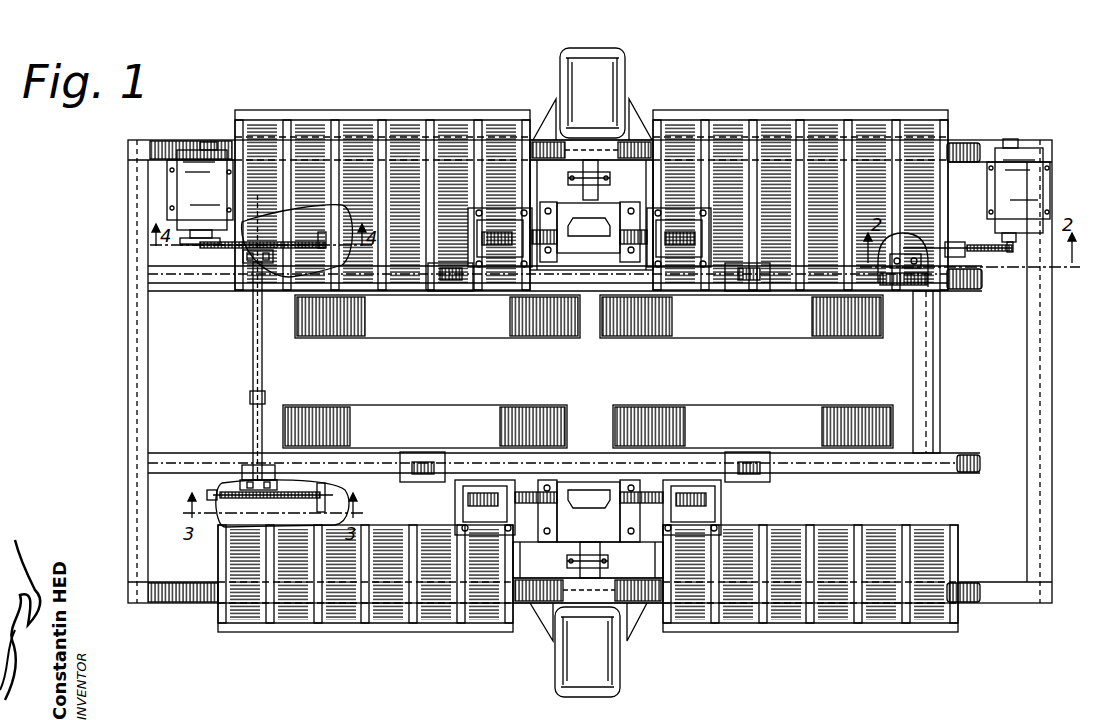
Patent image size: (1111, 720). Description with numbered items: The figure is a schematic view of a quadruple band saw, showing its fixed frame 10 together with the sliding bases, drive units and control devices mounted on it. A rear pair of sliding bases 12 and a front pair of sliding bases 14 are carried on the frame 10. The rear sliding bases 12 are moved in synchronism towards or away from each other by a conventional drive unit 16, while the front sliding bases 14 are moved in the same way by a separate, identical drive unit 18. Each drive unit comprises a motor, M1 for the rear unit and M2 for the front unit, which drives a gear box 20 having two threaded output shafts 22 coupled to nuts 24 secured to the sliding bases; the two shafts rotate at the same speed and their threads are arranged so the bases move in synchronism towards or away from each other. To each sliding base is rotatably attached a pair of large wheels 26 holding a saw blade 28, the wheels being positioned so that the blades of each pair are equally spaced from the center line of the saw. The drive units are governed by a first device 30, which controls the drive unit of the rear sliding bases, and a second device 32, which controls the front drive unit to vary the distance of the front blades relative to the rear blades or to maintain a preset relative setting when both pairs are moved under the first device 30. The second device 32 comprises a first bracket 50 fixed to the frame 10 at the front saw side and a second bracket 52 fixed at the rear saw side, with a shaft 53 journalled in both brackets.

The fixed frame 10 is at (1033, 562).
The rear pair of sliding bases 12 is at (503, 113).
The front pair of sliding bases 14 is at (441, 633).
The drive unit 16 is at (638, 98).
The drive unit 18 is at (543, 641).
The gear box 20 is at (593, 248).
The threaded output shafts 22 is at (535, 482).
The nuts 24 is at (527, 250).
The large wheels 26 is at (383, 322).
The saw blade 28 is at (296, 325).
The first device 30 is at (1036, 140).
The second device 32 is at (245, 342).
The first bracket 50 is at (248, 478).
The second bracket 52 is at (248, 258).
The shaft 53 is at (258, 397).
The motor M1 is at (600, 63).
The motor M2 is at (600, 663).